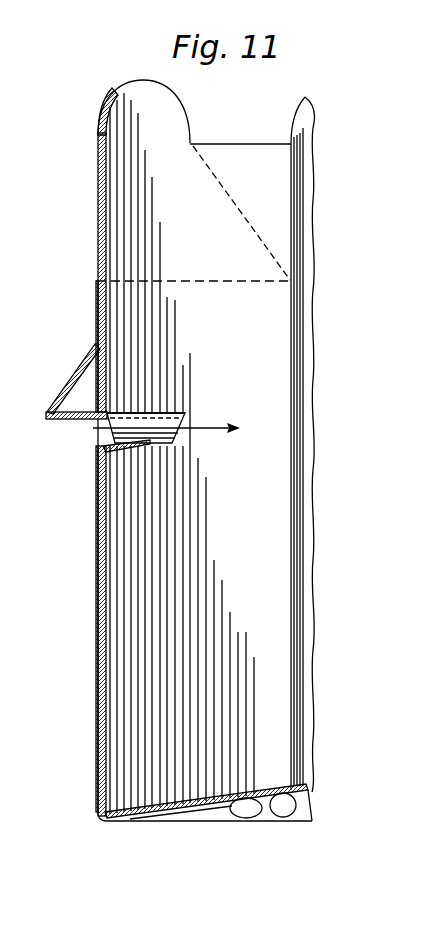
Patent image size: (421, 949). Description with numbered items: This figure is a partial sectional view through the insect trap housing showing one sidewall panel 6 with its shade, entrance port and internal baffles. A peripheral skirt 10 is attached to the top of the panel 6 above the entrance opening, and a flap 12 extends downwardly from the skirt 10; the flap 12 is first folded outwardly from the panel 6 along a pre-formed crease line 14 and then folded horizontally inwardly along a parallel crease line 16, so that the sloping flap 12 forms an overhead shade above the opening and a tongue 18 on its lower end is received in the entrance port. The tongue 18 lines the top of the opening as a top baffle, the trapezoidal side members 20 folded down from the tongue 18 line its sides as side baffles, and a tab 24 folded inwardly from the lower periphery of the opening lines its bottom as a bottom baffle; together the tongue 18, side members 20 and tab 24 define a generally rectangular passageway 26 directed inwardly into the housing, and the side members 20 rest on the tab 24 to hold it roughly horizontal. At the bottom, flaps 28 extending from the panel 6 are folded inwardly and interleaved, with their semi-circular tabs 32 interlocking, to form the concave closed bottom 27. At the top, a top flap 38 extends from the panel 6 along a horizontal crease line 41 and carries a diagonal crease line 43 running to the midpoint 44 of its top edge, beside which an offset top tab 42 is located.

The panels 6 is at (97, 655).
The peripheral skirt 10 is at (95, 288).
The flaps 12 is at (76, 372).
The crease line 14 is at (97, 345).
The crease line 16 is at (50, 417).
The tongue 18 is at (80, 425).
The side members 20 is at (165, 446).
The tab 24 is at (135, 456).
The passageway 26 is at (205, 425).
The closed bottom 27 is at (200, 812).
The flaps 28 is at (215, 790).
The semi-circular tab portion 32 is at (290, 805).
The top flaps 38 is at (98, 222).
The horizontal crease line 41 is at (215, 281).
The offset top tabs 42 is at (133, 90).
The diagonal crease line 43 is at (245, 218).
The midpoint 44 is at (192, 143).